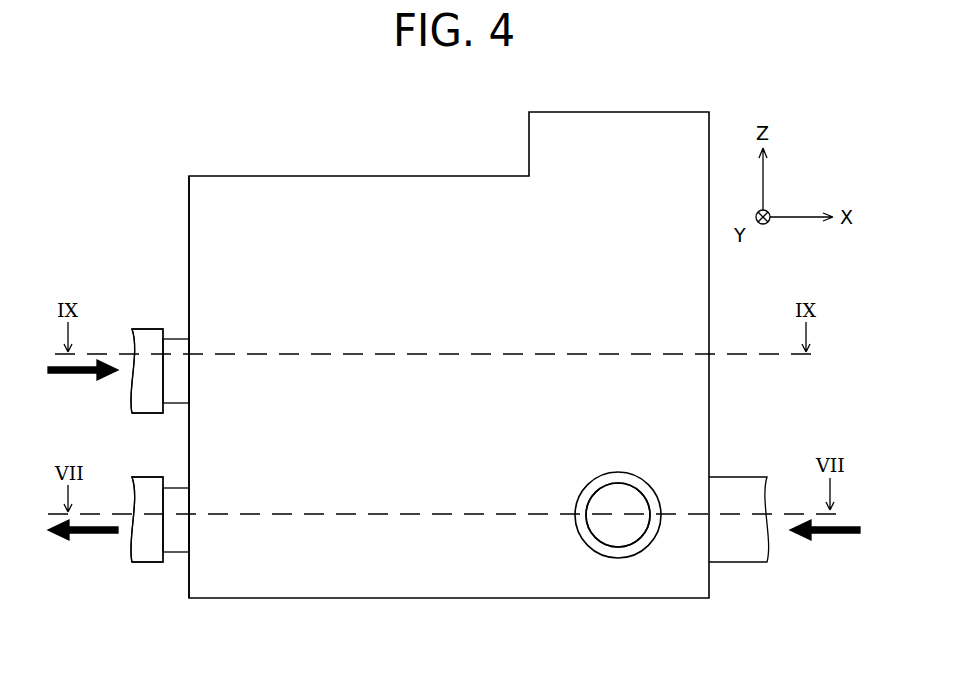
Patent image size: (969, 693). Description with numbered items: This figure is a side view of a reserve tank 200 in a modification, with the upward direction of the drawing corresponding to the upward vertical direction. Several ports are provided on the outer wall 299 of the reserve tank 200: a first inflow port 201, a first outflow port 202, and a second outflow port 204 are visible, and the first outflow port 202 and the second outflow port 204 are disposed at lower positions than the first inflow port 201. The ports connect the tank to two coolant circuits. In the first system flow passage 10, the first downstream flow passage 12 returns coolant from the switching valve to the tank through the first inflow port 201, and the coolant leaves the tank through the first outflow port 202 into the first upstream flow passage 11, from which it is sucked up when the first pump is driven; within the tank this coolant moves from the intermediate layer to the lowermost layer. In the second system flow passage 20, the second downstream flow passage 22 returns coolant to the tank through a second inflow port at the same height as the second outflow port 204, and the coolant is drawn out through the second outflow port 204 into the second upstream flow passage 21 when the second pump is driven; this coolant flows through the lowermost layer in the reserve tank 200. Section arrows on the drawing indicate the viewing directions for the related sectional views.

The reserve tank 200 is at (183, 150).
The outer wall 299 is at (189, 216).
The first downstream flow passage 12 is at (142, 328).
The first system flow passage 10 is at (147, 371).
The first inflow port 201 is at (182, 338).
The second upstream flow passage 21 is at (140, 565).
The second system flow passage 20 is at (147, 519).
The second outflow port 204 is at (180, 553).
The second downstream flow passage 22 is at (738, 476).
The first upstream flow passage 11 is at (615, 559).
The first outflow port 202 is at (633, 532).